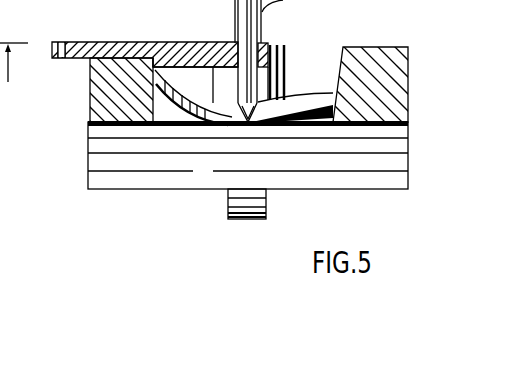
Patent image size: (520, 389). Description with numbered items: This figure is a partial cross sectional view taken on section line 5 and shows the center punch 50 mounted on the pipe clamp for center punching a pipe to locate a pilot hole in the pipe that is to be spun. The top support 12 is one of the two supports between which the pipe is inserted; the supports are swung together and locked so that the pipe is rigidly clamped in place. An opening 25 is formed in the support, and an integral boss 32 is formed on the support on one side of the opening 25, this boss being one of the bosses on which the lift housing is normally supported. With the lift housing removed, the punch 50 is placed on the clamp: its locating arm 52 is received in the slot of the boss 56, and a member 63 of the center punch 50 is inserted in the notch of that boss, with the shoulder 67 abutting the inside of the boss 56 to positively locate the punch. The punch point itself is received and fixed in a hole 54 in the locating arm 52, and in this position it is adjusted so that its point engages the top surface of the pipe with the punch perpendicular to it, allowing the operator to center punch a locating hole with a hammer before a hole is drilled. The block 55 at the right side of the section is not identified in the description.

The section line 5 is at (14, 71).
The top support 12 is at (412, 117).
The opening 25 is at (306, 96).
The integral boss 32 is at (288, 66).
The punch 50 is at (208, 43).
The locating arm 52 is at (147, 43).
The hole 54 is at (262, 45).
The right clamp block 55 is at (410, 47).
The boss 56 is at (90, 88).
The member 63 is at (107, 43).
The shoulder 67 is at (152, 60).